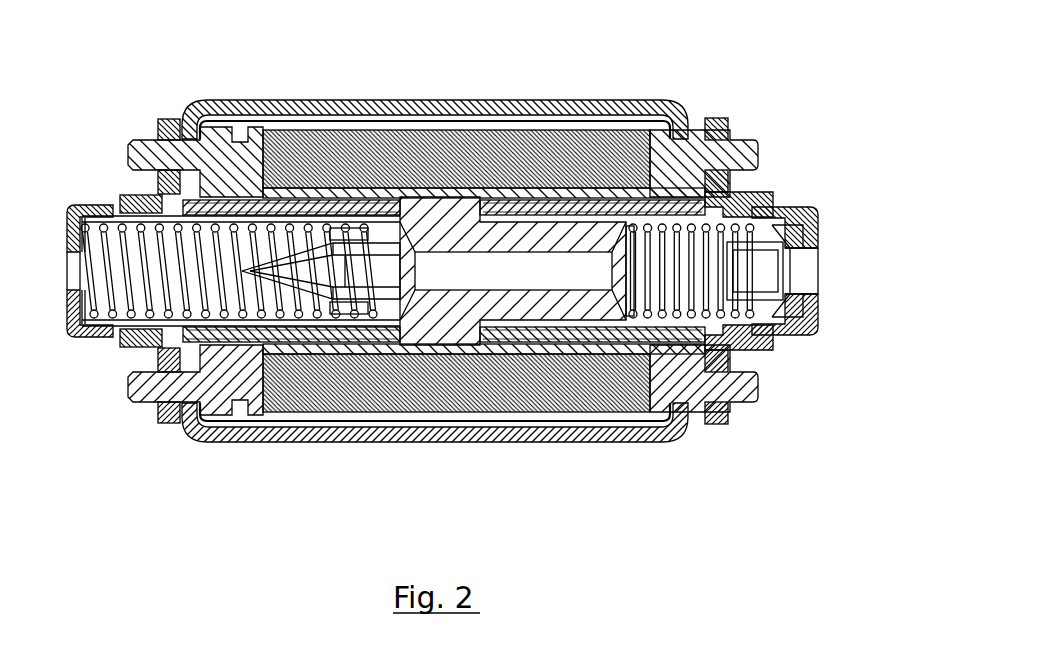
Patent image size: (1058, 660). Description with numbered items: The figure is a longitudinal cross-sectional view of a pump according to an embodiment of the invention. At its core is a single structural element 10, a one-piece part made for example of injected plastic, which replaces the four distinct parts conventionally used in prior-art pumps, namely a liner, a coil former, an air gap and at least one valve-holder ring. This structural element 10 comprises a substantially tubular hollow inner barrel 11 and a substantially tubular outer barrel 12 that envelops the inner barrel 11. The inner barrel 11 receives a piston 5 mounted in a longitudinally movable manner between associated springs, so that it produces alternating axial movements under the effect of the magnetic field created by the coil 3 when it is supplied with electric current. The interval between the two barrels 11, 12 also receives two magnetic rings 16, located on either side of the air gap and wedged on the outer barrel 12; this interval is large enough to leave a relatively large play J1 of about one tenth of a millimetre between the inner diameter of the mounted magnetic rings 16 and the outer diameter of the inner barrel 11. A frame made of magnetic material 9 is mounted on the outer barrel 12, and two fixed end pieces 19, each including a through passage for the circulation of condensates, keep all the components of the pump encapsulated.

The play J1 is at (145, 188).
The coil 3 is at (333, 177).
The magnetic rings 16 is at (375, 200).
The structural element 10 is at (755, 128).
The end pieces 19 is at (123, 347).
The inner barrel 11 is at (240, 323).
The outer barrel 12 is at (328, 353).
The piston 5 is at (442, 270).
The magnetic frame 9 is at (652, 443).